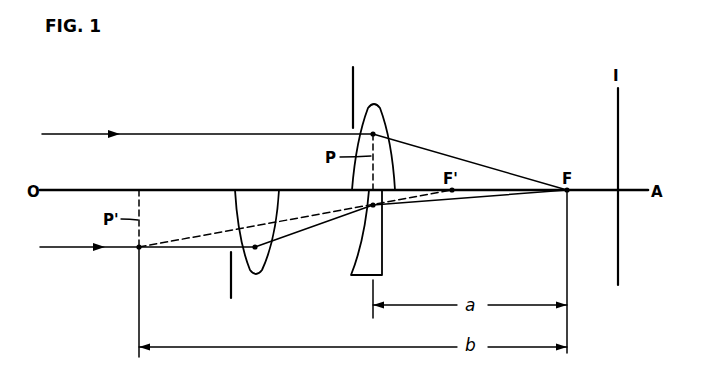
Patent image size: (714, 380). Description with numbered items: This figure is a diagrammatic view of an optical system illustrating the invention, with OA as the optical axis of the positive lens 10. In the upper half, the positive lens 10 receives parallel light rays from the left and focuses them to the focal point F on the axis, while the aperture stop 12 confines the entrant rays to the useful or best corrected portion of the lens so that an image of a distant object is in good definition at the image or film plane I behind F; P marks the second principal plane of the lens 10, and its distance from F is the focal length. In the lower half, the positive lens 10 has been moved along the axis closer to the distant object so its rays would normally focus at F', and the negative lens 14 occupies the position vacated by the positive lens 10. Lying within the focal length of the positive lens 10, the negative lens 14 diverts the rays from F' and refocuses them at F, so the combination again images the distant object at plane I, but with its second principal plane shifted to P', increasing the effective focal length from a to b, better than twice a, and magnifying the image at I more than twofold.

The positive lens 10 is at (386, 121).
The aperture stop 12 is at (355, 80).
The negative lens 14 is at (384, 263).